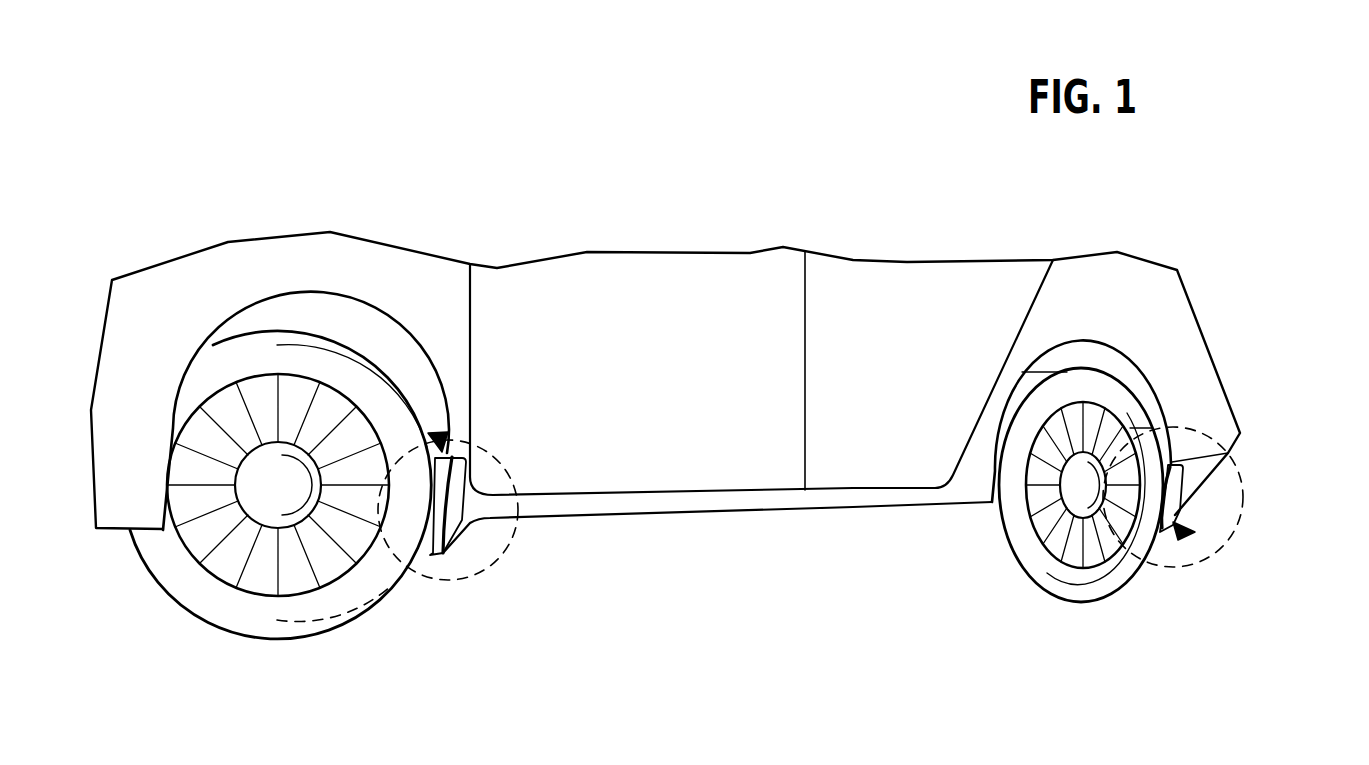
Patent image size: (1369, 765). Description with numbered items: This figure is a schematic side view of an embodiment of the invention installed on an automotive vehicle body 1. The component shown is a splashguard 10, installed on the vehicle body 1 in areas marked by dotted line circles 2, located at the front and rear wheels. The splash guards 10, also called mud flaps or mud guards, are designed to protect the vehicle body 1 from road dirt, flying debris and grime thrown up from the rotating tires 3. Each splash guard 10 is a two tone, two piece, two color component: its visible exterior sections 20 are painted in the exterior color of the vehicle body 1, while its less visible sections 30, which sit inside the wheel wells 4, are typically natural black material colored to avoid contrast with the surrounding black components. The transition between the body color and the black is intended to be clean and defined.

The vehicle body 1 is at (662, 288).
The dotted line circles 2 is at (508, 545).
The tires 3 is at (200, 593).
The wheel wells 4 is at (297, 308).
The splashguard 10 is at (438, 433).
The visible exterior sections 20 is at (458, 525).
The less visible sections 30 is at (433, 543).